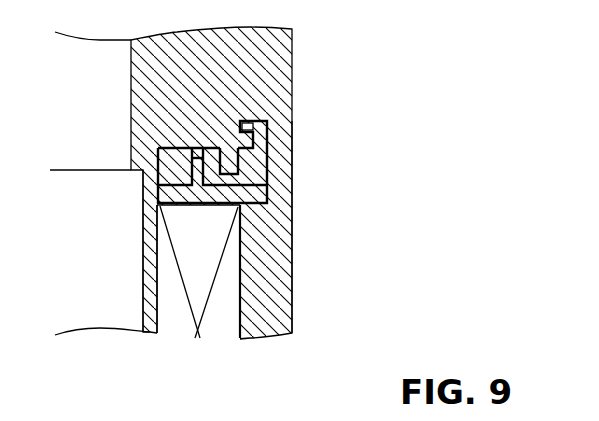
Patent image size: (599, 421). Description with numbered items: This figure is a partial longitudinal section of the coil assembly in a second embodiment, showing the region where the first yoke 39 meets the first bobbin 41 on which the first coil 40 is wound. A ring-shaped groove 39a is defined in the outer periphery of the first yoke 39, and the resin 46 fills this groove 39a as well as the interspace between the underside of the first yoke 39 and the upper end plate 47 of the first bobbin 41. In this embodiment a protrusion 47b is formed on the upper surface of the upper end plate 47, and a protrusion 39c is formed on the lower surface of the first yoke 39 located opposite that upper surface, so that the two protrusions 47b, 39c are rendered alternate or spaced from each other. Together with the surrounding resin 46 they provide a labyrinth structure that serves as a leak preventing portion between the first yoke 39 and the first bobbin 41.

The first yoke 39 is at (294, 52).
The ring-shaped groove 39a is at (273, 120).
The protrusion 39c is at (285, 164).
The first coil 40 is at (232, 295).
The first bobbin 41 is at (163, 295).
The resin 46 is at (283, 139).
The upper end plate 47 is at (268, 193).
The protrusion 47b is at (200, 148).